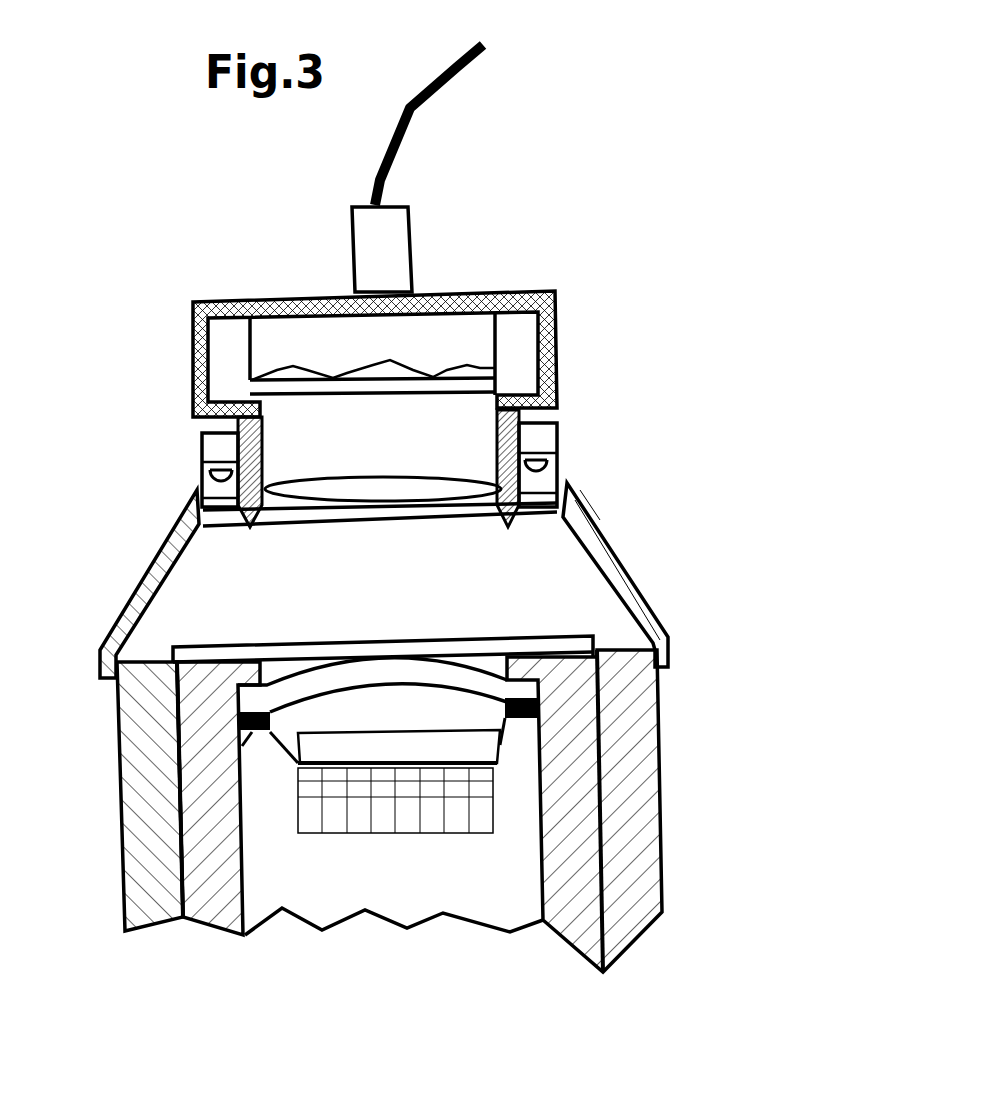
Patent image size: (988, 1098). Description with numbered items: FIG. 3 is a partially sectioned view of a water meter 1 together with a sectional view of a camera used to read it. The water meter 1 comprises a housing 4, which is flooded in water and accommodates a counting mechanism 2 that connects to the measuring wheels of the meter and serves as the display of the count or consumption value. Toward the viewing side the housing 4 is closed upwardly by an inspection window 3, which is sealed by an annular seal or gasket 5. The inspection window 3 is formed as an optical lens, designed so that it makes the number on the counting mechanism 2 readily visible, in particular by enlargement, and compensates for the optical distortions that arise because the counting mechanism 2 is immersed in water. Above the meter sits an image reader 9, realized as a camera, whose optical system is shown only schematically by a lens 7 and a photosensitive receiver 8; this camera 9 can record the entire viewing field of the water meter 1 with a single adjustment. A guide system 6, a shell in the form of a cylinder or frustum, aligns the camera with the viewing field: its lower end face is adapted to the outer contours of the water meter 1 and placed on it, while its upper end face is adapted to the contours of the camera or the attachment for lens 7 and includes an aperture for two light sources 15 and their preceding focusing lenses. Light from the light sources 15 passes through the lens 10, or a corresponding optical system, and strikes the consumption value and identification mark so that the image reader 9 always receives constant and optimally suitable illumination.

The water meter 1 is at (660, 688).
The counting mechanism 2 is at (535, 773).
The inspection window 3 is at (297, 690).
The housing 4 is at (639, 811).
The annular seal 5 is at (212, 798).
The guide system 6 is at (420, 540).
The lens 7 is at (290, 383).
The photosensitive receiver 8 is at (315, 281).
The image reader 9 is at (545, 287).
The lens 10 is at (354, 440).
The light sources 15 is at (359, 409).